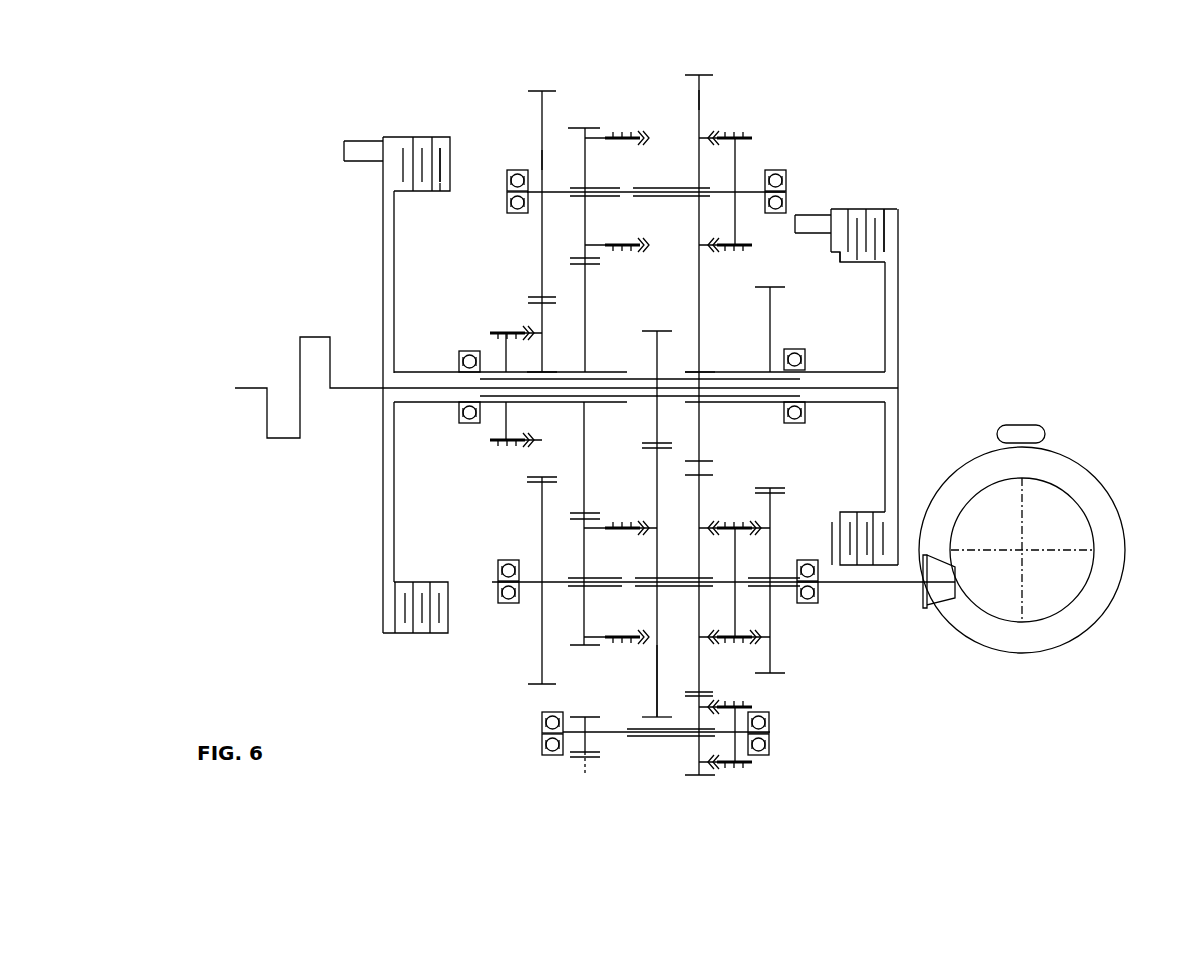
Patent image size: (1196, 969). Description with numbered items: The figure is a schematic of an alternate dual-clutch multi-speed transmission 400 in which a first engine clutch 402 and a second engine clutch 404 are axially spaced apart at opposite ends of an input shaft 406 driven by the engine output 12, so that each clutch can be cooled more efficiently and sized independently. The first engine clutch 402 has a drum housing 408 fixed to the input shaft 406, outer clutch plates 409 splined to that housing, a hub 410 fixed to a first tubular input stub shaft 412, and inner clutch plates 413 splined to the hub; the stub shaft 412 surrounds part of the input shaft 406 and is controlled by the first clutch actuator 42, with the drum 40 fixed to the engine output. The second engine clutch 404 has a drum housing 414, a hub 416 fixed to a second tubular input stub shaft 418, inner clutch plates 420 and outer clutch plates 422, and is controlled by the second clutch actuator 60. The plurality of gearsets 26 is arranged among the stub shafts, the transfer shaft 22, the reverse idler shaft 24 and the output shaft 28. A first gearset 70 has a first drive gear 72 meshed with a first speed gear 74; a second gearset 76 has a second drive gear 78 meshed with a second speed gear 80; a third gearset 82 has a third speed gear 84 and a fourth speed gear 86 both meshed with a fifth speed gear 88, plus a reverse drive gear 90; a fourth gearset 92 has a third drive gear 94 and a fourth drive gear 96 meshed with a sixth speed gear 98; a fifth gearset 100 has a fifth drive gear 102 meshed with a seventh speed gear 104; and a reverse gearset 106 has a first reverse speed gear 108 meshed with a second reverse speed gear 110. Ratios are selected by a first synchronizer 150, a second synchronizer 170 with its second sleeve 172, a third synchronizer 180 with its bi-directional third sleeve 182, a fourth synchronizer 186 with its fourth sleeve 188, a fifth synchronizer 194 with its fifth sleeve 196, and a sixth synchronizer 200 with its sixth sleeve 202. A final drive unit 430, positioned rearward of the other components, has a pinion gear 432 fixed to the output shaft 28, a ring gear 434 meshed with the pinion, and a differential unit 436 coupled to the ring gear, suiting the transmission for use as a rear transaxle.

The engine output 12 is at (337, 402).
The transfer shaft 22 is at (552, 182).
The reverse idler shaft 24 is at (608, 737).
The plurality of gearsets 26 is at (512, 487).
The output shaft 28 is at (528, 587).
The drum 40 is at (443, 137).
The first clutch actuator 42 is at (350, 150).
The second clutch actuator 60 is at (813, 228).
The first gearset 70 is at (657, 720).
The first drive gear 72 is at (657, 422).
The first speed gear 74 is at (657, 676).
The second gearset 76 is at (700, 72).
The second drive gear 78 is at (702, 340).
The second speed gear 80 is at (699, 100).
The third gearset 82 is at (582, 125).
The third speed gear 84 is at (585, 150).
The fourth speed gear 86 is at (587, 605).
The fifth speed gear 88 is at (583, 262).
The reverse drive gear 90 is at (585, 743).
The fourth gearset 92 is at (542, 85).
The third drive gear 94 is at (540, 160).
The fourth drive gear 96 is at (540, 680).
The sixth speed gear 98 is at (540, 305).
The fifth gearset 100 is at (770, 283).
The fifth drive gear 102 is at (765, 288).
The seventh speed gear 104 is at (783, 655).
The reverse gearset 106 is at (700, 780).
The first reverse speed gear 108 is at (693, 752).
The second reverse speed gear 110 is at (768, 673).
The first synchronizer 150 is at (620, 525).
The second synchronizer 170 is at (620, 252).
The second sleeve 172 is at (620, 136).
The third synchronizer 180 is at (742, 495).
The third sleeve 182 is at (733, 526).
The fourth synchronizer 186 is at (738, 103).
The fourth sleeve 188 is at (737, 138).
The fifth synchronizer 194 is at (505, 450).
The fifth sleeve 196 is at (507, 330).
The sixth synchronizer 200 is at (733, 772).
The sixth sleeve 202 is at (752, 703).
The dual-clutch multi-speed transmission 400 is at (265, 112).
The first engine clutch 402 is at (390, 135).
The second engine clutch 404 is at (892, 195).
The input shaft 406 is at (405, 386).
The drum housing 408 is at (382, 178).
The outer clutch plates 409 is at (455, 152).
The hub 410 is at (397, 253).
The first tubular input stub shaft 412 is at (420, 373).
The inner clutch plates 413 is at (440, 183).
The drum housing 414 is at (900, 290).
The hub 416 is at (880, 325).
The second tubular input stub shaft 418 is at (710, 370).
The inner clutch plates 420 is at (838, 258).
The outer clutch plates 422 is at (883, 222).
The final drive unit 430 is at (1072, 437).
The pinion gear 432 is at (928, 605).
The ring gear 434 is at (1017, 638).
The differential unit 436 is at (1048, 562).